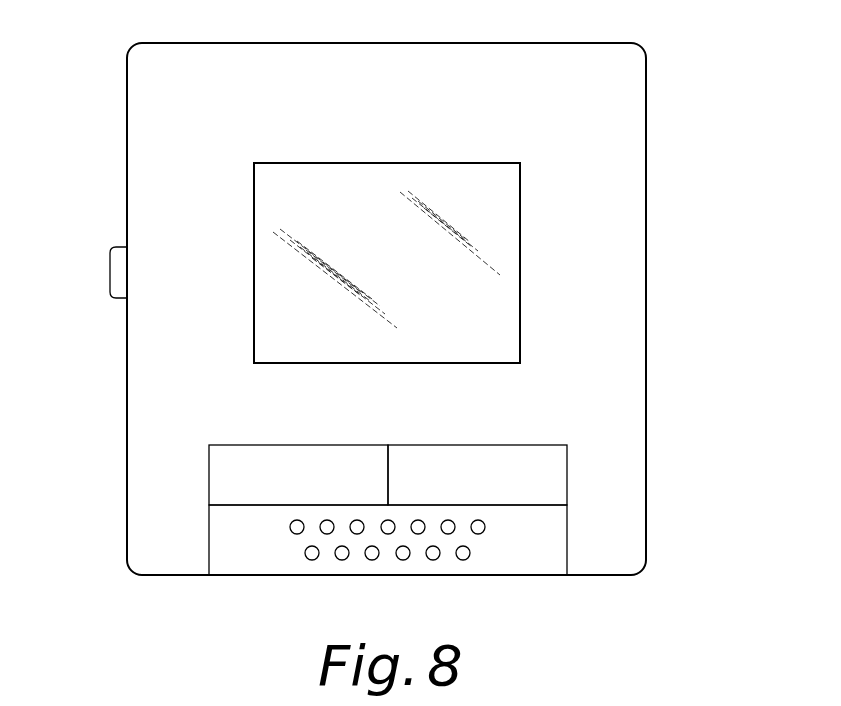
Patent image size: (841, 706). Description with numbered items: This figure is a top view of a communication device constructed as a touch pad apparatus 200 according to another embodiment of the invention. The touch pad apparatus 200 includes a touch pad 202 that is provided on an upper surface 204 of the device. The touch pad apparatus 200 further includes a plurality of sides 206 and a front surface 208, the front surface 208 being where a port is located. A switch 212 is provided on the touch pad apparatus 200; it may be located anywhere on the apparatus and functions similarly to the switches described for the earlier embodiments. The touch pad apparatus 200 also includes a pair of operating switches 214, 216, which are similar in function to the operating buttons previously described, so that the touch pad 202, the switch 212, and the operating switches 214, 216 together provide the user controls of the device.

The touch pad apparatus 200 is at (627, 60).
The touch pad 202 is at (312, 188).
The upper surface 204 is at (630, 157).
The sides 206 is at (646, 313).
The front surface 208 is at (446, 43).
The switch 212 is at (110, 268).
The operating switch 214 is at (225, 480).
The operating switch 216 is at (555, 472).